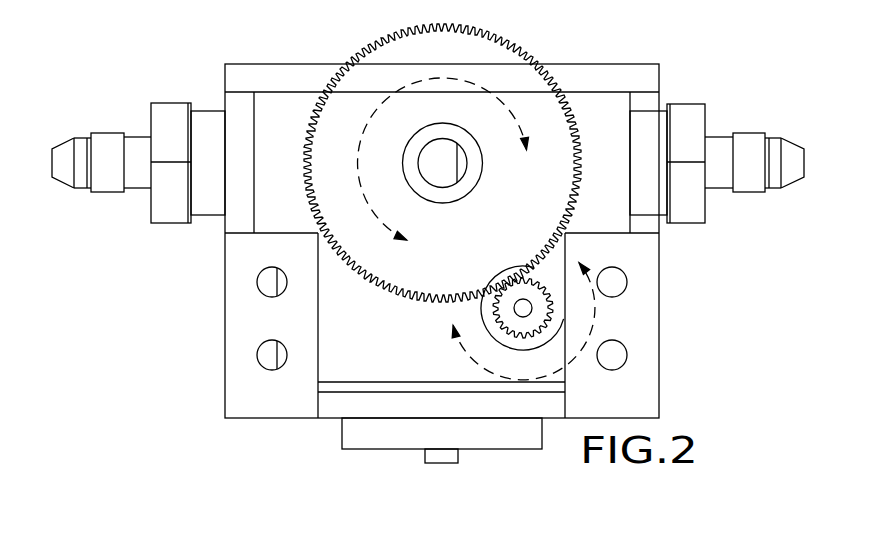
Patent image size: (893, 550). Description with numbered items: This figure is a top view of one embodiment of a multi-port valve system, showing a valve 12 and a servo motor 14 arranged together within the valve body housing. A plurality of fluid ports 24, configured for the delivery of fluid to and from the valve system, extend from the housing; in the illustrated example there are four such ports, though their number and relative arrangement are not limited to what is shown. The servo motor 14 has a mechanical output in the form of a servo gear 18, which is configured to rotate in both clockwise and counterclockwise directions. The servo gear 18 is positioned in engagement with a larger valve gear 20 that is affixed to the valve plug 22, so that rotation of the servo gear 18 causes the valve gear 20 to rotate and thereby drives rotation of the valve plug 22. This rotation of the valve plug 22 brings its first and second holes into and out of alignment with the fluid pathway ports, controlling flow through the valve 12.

The valve 12 is at (448, 178).
The servo motor 14 is at (335, 352).
The servo gear 18 is at (510, 292).
The valve gear 20 is at (388, 52).
The valve plug 22 is at (432, 155).
The fluid ports 24 is at (110, 143).